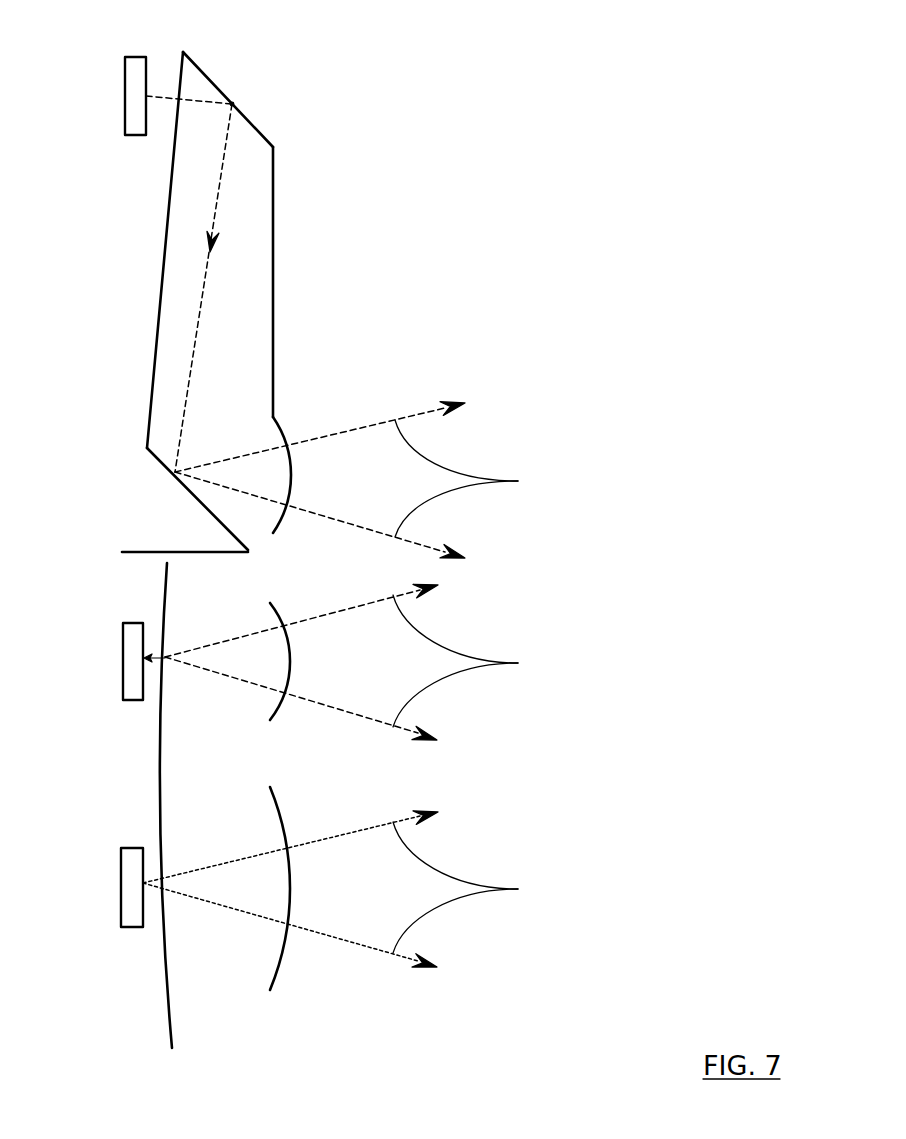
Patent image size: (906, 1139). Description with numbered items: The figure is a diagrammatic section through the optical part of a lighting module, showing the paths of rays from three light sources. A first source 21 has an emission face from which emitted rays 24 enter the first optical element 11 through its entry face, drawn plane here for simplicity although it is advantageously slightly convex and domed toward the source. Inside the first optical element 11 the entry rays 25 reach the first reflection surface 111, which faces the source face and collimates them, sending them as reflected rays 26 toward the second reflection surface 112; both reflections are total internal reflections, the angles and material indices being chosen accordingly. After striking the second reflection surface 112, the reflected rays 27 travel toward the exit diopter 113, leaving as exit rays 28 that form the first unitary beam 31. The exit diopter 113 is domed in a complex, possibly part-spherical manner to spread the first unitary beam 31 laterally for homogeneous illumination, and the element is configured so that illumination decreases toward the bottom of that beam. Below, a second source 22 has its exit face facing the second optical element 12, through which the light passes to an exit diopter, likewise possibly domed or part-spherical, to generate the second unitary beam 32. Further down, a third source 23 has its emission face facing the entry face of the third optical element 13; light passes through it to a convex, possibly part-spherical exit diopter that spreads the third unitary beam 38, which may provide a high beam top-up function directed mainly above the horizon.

The first optical element 11 is at (212, 302).
The first reflection surface 111 is at (258, 128).
The second reflection surface 112 is at (197, 502).
The exit diopter 113 is at (291, 468).
The second optical element 12 is at (258, 652).
The third optical element 13 is at (258, 875).
The first source 21 is at (132, 113).
The second source 22 is at (130, 672).
The third source 23 is at (130, 882).
The emitted ray 24 is at (158, 95).
The entry ray 25 is at (195, 99).
The reflected ray 26 is at (202, 292).
The reflected ray 27 is at (233, 460).
The exit ray 28 is at (312, 513).
The first unitary beam 31 is at (476, 478).
The second unitary beam 32 is at (350, 662).
The third unitary beam 38 is at (350, 889).